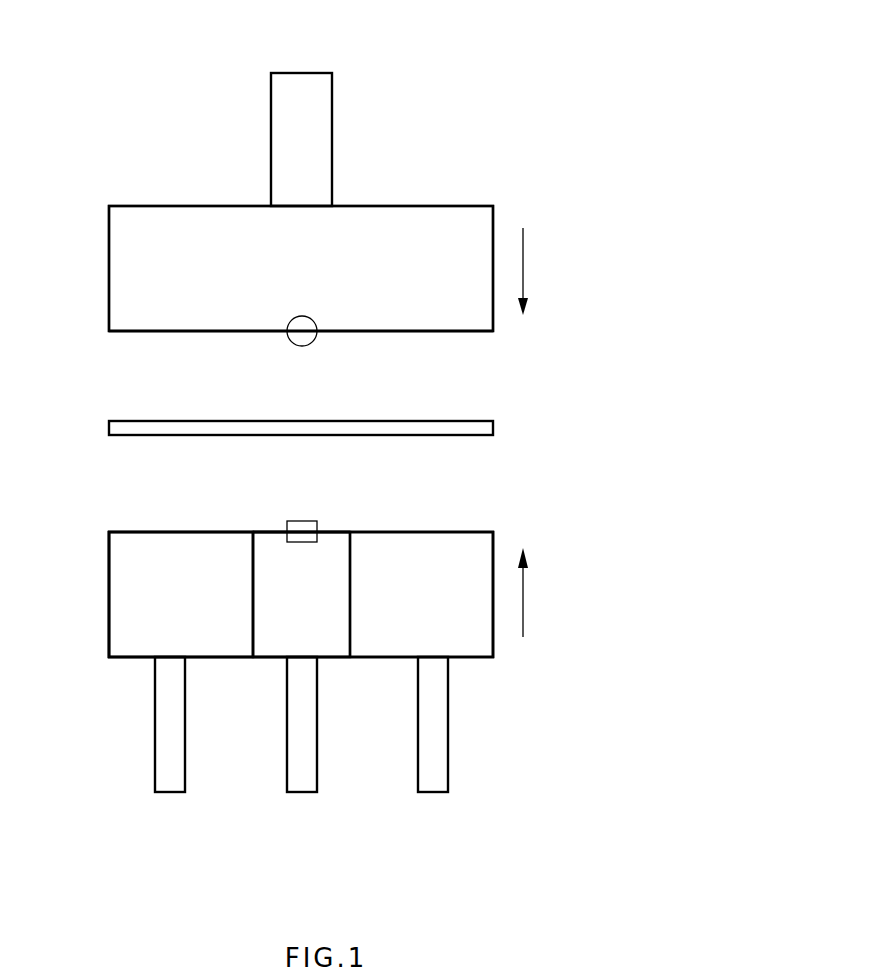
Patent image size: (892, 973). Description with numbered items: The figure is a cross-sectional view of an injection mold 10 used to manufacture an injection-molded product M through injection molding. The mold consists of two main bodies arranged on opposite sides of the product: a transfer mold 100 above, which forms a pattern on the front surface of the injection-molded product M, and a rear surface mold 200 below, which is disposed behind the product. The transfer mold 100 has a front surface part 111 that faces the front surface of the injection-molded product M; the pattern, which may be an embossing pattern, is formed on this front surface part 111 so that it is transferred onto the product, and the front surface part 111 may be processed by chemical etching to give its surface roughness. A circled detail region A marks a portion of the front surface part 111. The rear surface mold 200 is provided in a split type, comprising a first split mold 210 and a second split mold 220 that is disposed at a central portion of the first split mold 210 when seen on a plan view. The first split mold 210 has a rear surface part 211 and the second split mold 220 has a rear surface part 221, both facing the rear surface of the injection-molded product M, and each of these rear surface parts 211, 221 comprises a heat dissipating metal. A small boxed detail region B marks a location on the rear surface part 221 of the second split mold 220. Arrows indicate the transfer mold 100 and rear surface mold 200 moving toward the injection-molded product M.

The injection mold 10 is at (569, 42).
The transfer mold 100 is at (508, 193).
The front surface part 111 is at (147, 332).
The detail region A is at (307, 344).
The injection-molded product M is at (493, 428).
The rear surface mold 200 is at (508, 523).
The first split mold 210 is at (237, 623).
The rear surface part 211 is at (178, 532).
The second split mold 220 is at (270, 649).
The rear surface part 221 is at (268, 532).
The detail region B is at (302, 521).